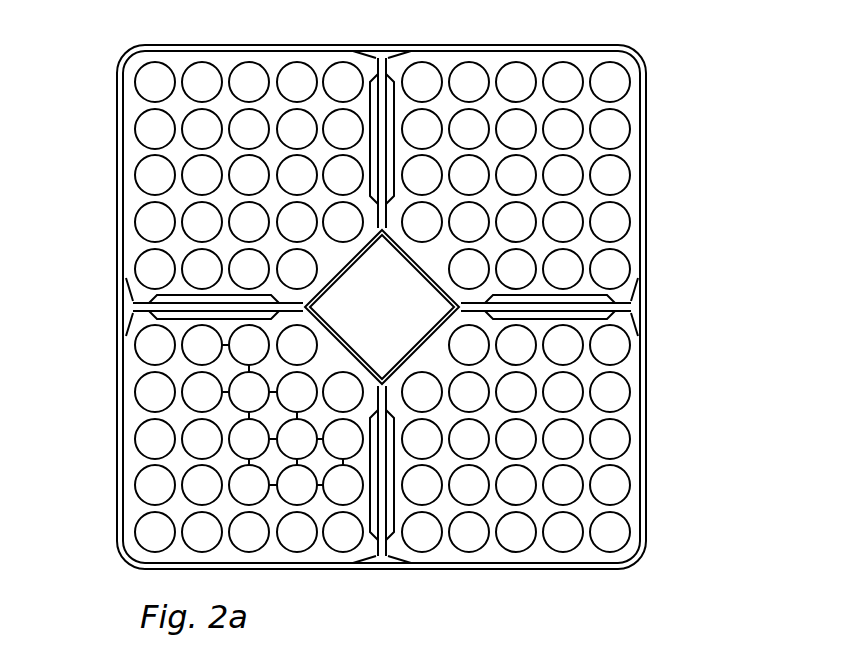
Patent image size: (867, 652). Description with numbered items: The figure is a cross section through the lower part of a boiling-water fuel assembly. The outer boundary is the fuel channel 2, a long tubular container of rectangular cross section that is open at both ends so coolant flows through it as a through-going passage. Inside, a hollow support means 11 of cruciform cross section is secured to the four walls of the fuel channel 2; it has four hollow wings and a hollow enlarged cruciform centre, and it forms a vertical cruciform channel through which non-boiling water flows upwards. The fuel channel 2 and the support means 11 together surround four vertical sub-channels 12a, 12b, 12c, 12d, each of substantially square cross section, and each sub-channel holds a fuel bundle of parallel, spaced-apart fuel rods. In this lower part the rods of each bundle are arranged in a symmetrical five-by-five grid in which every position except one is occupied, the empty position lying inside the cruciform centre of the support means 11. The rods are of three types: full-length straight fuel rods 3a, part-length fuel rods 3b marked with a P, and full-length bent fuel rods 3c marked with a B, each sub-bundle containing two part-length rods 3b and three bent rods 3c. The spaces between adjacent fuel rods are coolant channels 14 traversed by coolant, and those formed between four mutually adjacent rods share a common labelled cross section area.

The fuel channel 2 is at (646, 428).
The support means 11 is at (622, 299).
The sub-channel 12a is at (557, 144).
The sub-channel 12b is at (566, 433).
The sub-channel 12c is at (205, 438).
The sub-channel 12d is at (177, 58).
The full-length straight fuel rod 3a is at (617, 218).
The part-length fuel rod 3b is at (471, 331).
The full-length bent fuel rod 3c is at (516, 360).
The coolant channel 14 is at (258, 417).